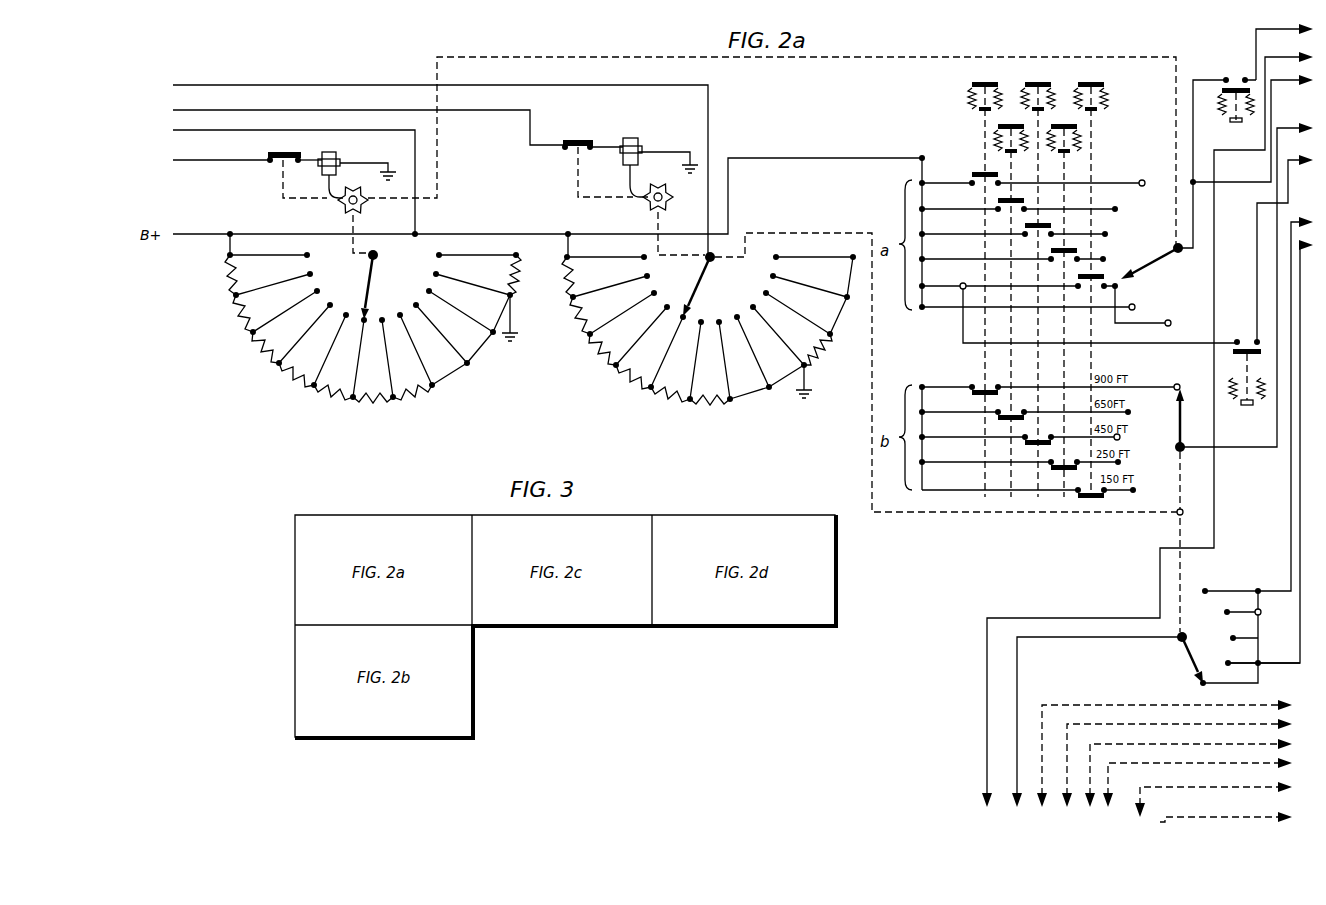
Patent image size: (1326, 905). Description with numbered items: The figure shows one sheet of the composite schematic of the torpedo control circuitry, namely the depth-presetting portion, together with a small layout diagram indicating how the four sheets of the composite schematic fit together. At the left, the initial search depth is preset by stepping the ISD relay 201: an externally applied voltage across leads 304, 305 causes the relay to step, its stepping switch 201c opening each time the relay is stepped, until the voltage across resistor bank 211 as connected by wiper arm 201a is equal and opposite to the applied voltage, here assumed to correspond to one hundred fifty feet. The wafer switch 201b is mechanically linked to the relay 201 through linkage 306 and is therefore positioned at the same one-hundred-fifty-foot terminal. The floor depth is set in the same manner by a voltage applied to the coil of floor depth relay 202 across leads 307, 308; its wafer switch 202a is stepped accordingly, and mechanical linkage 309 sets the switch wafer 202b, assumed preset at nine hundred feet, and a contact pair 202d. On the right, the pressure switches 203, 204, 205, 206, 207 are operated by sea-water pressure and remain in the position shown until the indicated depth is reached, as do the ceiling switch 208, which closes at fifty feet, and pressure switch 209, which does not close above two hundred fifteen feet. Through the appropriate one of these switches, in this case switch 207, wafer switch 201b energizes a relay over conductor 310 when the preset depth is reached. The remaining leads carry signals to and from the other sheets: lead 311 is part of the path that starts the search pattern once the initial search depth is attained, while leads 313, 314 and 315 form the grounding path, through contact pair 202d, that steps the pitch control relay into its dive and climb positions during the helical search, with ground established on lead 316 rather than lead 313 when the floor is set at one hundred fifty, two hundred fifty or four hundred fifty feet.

The ISD relay 201 is at (343, 162).
The wiper arm 201a is at (426, 287).
The wafer switch 201b is at (1176, 244).
The stepping switch 201c is at (270, 156).
The floor depth relay 202 is at (644, 132).
The wafer switch of floor depth relay 202a is at (760, 289).
The switch wafer 202b is at (1184, 450).
The contact pair of relay 202 202d is at (578, 139).
The pressure switch 203 is at (968, 82).
The pressure switch 204 is at (996, 130).
The pressure switch 205 is at (1022, 82).
The pressure switch 206 is at (1078, 130).
The pressure switch 207 is at (1076, 82).
The ceiling switch 208 is at (1252, 122).
The pressure switch 209 is at (1245, 410).
The resistor bank 211 is at (241, 329).
The lead 304 is at (316, 130).
The lead 305 is at (193, 162).
The mechanical linkage 306 is at (283, 197).
The lead 307 is at (297, 85).
The lead 308 is at (310, 110).
The mechanical linkage 309 is at (578, 185).
The conductor 310 is at (1256, 48).
The lead 311 is at (1290, 57).
The lead 313 is at (1265, 667).
The lead 314 is at (1036, 640).
The lead 315 is at (1078, 705).
The lead 316 is at (1270, 591).